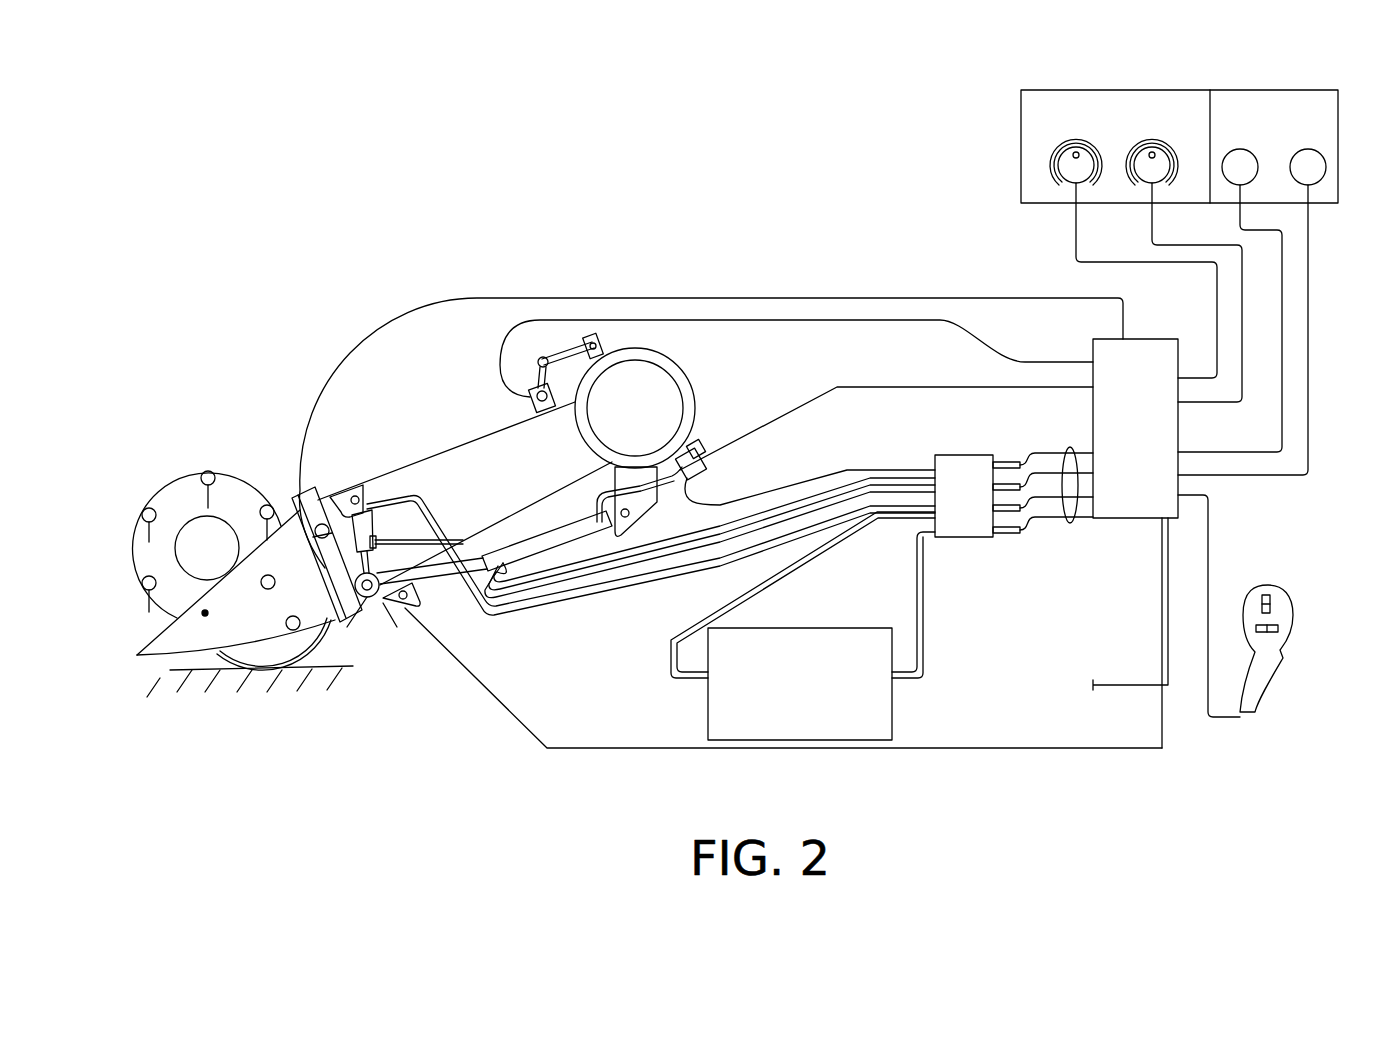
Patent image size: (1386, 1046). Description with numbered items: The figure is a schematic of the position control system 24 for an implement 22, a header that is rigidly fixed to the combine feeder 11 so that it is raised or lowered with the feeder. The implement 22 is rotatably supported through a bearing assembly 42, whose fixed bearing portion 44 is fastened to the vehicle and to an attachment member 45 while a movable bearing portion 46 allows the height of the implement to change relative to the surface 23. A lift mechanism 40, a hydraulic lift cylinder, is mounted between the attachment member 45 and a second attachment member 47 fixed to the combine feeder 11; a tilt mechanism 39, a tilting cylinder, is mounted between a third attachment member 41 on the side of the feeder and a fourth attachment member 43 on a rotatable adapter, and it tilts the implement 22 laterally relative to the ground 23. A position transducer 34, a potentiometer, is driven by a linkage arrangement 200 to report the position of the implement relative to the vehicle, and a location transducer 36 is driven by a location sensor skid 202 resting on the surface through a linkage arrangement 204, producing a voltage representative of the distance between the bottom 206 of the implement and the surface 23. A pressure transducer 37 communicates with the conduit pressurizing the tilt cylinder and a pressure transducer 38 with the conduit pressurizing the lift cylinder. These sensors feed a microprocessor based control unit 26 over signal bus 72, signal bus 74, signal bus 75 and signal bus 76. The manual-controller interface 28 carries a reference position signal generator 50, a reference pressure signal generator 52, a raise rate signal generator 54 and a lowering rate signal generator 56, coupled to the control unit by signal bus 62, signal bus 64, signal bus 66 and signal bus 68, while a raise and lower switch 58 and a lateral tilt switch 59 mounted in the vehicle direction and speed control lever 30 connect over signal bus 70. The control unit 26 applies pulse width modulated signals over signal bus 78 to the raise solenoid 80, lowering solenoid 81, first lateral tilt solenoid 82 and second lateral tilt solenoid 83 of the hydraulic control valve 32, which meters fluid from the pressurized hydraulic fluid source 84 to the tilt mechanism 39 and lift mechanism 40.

The combine feeder 11 is at (450, 458).
The implement 22 is at (340, 627).
The surface 23 is at (162, 680).
The position control system 24 is at (948, 598).
The control unit 26 is at (1125, 520).
The manual-controller interface 28 is at (1040, 90).
The vehicle direction and speed control lever 30 is at (1270, 687).
The hydraulic control valve 32 is at (948, 455).
The position transducer 34 is at (525, 406).
The location transducer 36 is at (303, 510).
The pressure transducer 37 is at (297, 604).
The pressure transducer 38 is at (712, 432).
The tilt mechanism 39 is at (393, 492).
The lift mechanism 40 is at (572, 520).
The third attachment member 41 is at (350, 490).
The bearing assembly 42 is at (712, 369).
The fourth attachment member 43 is at (402, 562).
The fixed bearing portion 44 is at (634, 350).
The attachment member 45 is at (630, 516).
The movable bearing portion 46 is at (652, 385).
The second attachment member 47 is at (418, 625).
The reference position signal generator 50 is at (1068, 195).
The reference pressure signal generator 52 is at (1145, 195).
The raise rate signal generator 54 is at (1238, 190).
The lowering rate signal generator 56 is at (1312, 188).
The raise and lower switch 58 is at (1275, 600).
The lateral tilt switch 59 is at (1285, 630).
The signal bus 62 is at (1133, 263).
The signal bus 64 is at (1205, 402).
The signal bus 66 is at (1192, 452).
The signal bus 68 is at (1270, 478).
The signal bus 70 is at (1215, 562).
The signal bus 72 is at (990, 350).
The signal bus 74 is at (910, 298).
The signal bus 75 is at (1030, 750).
The signal bus 76 is at (953, 387).
The signal bus 78 is at (1073, 525).
The raise solenoid 80 is at (1010, 462).
The lowering solenoid 81 is at (1023, 490).
The first lateral tilt solenoid 82 is at (1022, 512).
The second lateral tilt solenoid 83 is at (1010, 530).
The pressurized hydraulic fluid source 84 is at (810, 628).
The linkage arrangement 200 is at (565, 348).
The location sensor skid 202 is at (298, 664).
The linkage arrangement 204 is at (330, 628).
The bottom 206 is at (193, 658).